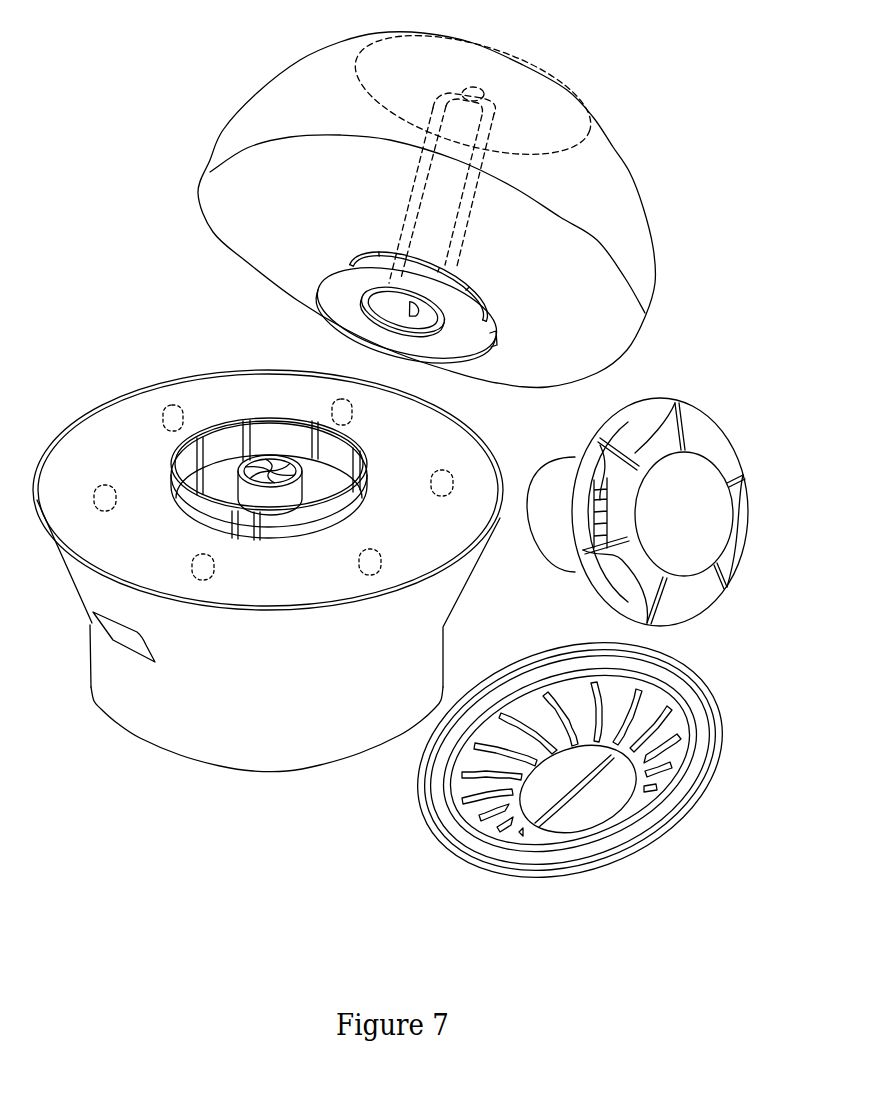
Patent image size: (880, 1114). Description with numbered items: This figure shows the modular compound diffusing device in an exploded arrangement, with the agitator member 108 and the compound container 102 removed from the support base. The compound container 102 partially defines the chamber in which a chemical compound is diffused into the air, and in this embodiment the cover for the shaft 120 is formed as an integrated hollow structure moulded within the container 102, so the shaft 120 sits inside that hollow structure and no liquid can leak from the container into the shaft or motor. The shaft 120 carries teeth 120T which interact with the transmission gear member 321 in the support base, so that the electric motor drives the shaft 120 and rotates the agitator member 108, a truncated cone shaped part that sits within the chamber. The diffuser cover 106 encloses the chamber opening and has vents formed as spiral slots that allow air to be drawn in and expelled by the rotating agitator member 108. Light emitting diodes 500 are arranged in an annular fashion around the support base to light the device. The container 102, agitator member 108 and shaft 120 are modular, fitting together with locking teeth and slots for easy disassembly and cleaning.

The compound container 102 is at (313, 88).
The shaft 120 is at (464, 204).
The teeth of the shaft 120T is at (392, 306).
The transmission gear member 321 is at (240, 497).
The light emitting diodes 500 is at (115, 523).
The agitator member 108 is at (680, 390).
The diffuser cover 106 is at (423, 843).